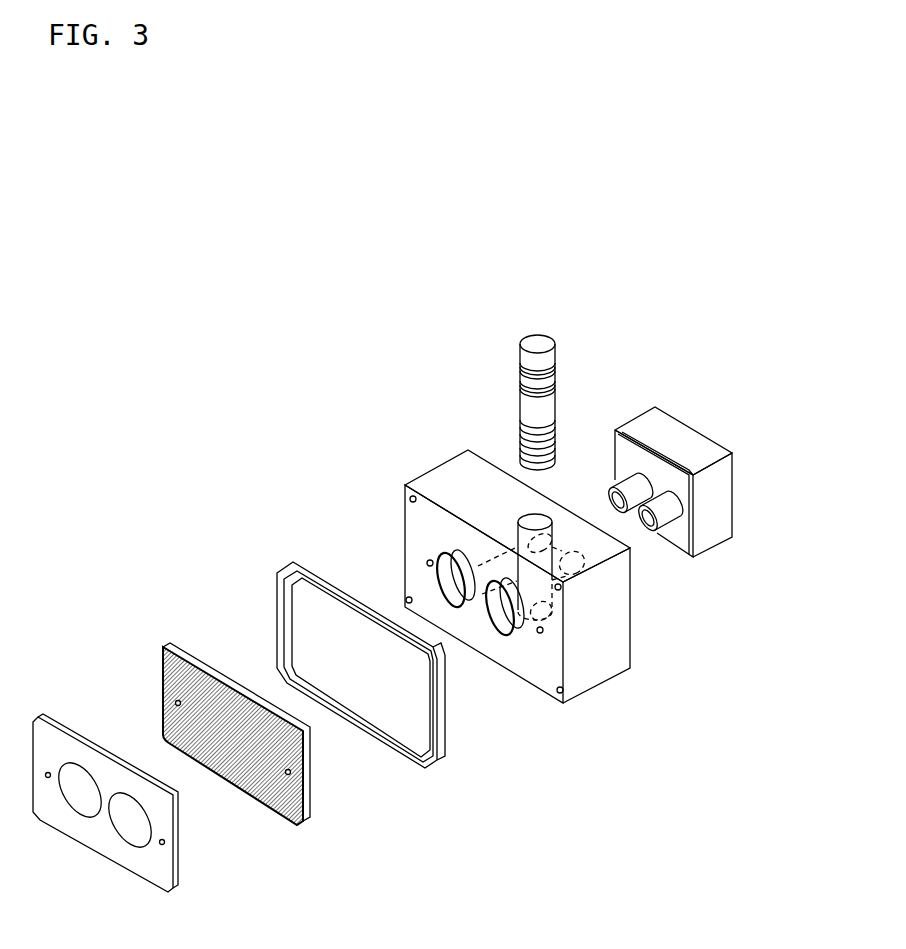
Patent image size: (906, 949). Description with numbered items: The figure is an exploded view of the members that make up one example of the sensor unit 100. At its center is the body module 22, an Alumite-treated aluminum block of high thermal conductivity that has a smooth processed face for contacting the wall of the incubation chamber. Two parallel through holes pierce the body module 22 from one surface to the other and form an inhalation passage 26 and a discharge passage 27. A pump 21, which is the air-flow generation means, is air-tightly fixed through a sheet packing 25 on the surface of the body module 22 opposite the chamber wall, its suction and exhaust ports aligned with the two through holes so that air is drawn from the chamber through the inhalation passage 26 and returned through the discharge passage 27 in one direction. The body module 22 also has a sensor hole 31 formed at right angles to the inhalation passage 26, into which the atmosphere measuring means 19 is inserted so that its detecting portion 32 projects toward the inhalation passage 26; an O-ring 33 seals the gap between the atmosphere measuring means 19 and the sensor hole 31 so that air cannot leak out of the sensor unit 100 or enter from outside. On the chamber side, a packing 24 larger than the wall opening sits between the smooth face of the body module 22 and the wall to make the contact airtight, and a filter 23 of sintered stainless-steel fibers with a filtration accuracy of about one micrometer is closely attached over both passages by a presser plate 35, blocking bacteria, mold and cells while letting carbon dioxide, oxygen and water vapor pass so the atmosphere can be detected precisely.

The atmosphere measuring means 19 is at (543, 345).
The O-ring 33 is at (520, 388).
The detecting portion 32 is at (520, 433).
The sensor hole 31 is at (535, 522).
The body module 22 is at (615, 657).
The discharge passage 27 is at (437, 577).
The inhalation passage 26 is at (499, 578).
The pump 21 is at (713, 505).
The sheet packing 25 is at (703, 553).
The packing 24 is at (428, 760).
The filter 23 is at (303, 810).
The presser plate 35 is at (163, 872).
The sensor unit 100 is at (265, 398).